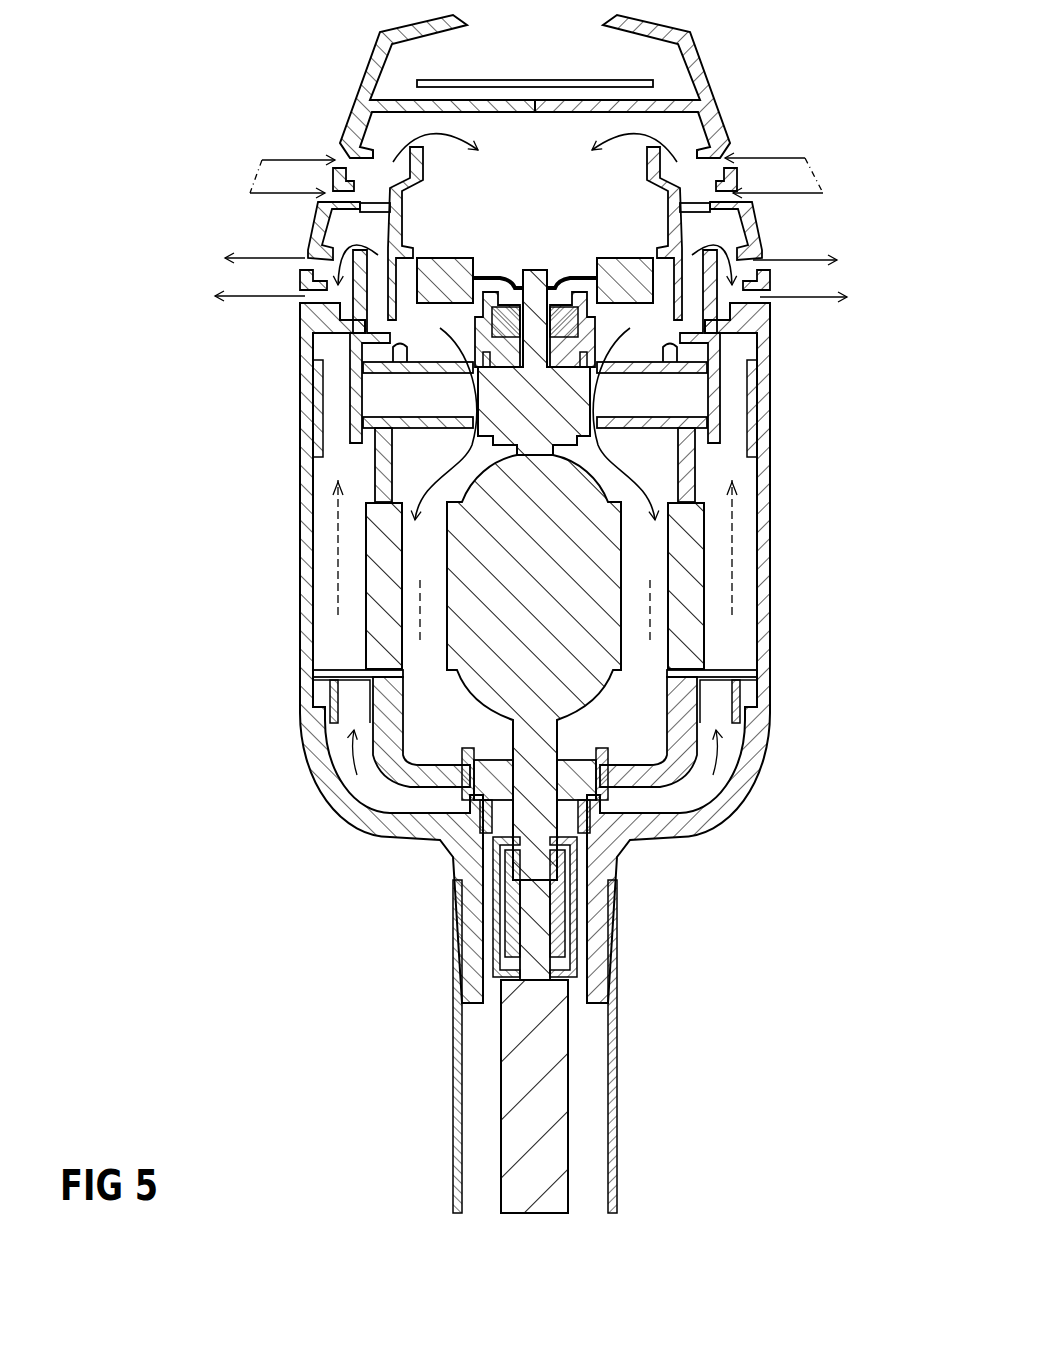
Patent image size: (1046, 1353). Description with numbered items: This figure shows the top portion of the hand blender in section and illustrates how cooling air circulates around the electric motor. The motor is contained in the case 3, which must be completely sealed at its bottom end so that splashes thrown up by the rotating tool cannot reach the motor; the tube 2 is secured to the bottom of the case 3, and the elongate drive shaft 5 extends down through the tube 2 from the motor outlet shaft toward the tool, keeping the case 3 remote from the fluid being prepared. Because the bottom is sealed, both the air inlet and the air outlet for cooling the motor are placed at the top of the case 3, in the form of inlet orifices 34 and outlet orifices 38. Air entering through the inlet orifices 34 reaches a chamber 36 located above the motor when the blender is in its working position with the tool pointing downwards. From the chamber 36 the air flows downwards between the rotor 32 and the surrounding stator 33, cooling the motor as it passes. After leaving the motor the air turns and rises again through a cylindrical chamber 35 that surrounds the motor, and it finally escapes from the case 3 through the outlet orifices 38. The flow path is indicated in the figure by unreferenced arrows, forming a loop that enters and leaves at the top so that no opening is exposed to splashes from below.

The tube 2 is at (617, 1025).
The case 3 is at (767, 680).
The drive shaft 5 is at (555, 1133).
The rotor 32 is at (600, 598).
The stator 33 is at (688, 523).
The inlet orifices 34 is at (334, 160).
The cylindrical chamber 35 is at (340, 585).
The chamber 36 is at (535, 171).
The outlet orifices 38 is at (549, 269).